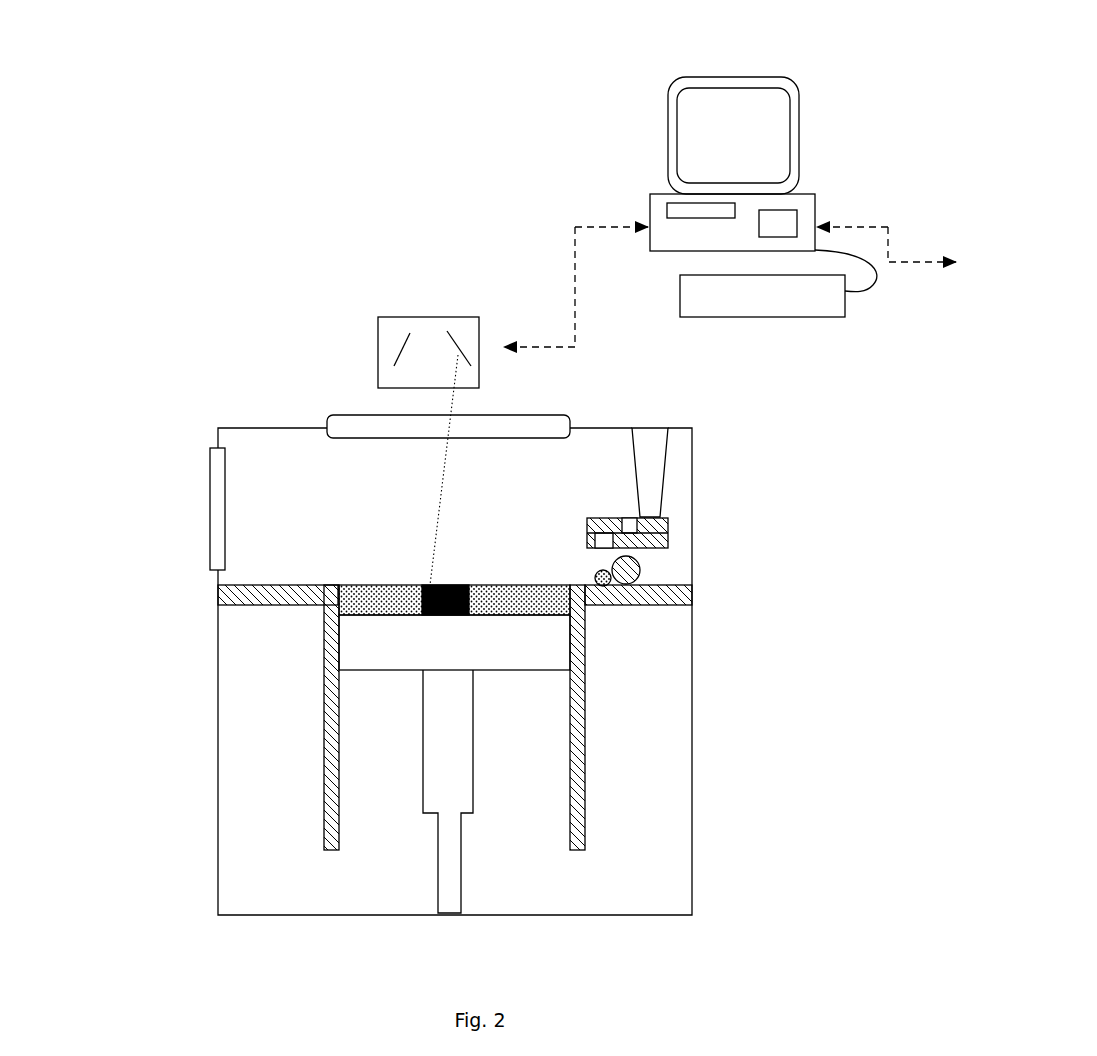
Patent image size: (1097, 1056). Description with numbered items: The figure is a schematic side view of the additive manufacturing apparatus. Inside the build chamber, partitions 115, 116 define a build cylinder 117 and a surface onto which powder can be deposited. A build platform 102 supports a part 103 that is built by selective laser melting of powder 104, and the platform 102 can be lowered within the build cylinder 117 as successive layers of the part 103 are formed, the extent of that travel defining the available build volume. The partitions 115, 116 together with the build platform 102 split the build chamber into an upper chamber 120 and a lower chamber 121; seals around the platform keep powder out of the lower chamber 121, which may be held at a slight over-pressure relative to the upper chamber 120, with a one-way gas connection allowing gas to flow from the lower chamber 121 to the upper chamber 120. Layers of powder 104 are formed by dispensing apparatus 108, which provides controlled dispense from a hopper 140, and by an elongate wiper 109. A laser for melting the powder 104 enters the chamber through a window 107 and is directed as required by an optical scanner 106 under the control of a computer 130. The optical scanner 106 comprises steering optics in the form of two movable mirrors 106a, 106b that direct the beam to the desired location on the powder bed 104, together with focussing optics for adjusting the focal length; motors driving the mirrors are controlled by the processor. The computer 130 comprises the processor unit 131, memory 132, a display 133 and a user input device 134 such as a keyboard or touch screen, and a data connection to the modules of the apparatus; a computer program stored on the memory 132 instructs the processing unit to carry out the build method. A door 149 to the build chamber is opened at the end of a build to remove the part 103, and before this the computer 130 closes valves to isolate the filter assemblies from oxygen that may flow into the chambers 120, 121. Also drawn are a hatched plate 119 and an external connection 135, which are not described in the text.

The build platform 102 is at (489, 640).
The part 103 is at (418, 614).
The powder 104 is at (400, 601).
The optical scanner 106 is at (365, 357).
The movable mirror 106a is at (399, 329).
The movable mirror 106b is at (463, 327).
The window 107 is at (418, 414).
The dispensing apparatus 108 is at (672, 531).
The elongate wiper 109 is at (644, 566).
The partition 115 is at (226, 604).
The partition 116 is at (587, 777).
The build cylinder 117 is at (568, 608).
The right hatched plate 119 is at (604, 588).
The upper chamber 120 is at (455, 671).
The lower chamber 121 is at (472, 791).
The computer 130 is at (630, 102).
The processor unit 131 is at (782, 214).
The memory 132 is at (678, 201).
The display 133 is at (767, 73).
The user input device 134 is at (789, 321).
The external connection 135 is at (927, 267).
The hopper 140 is at (664, 468).
The door 149 is at (208, 473).